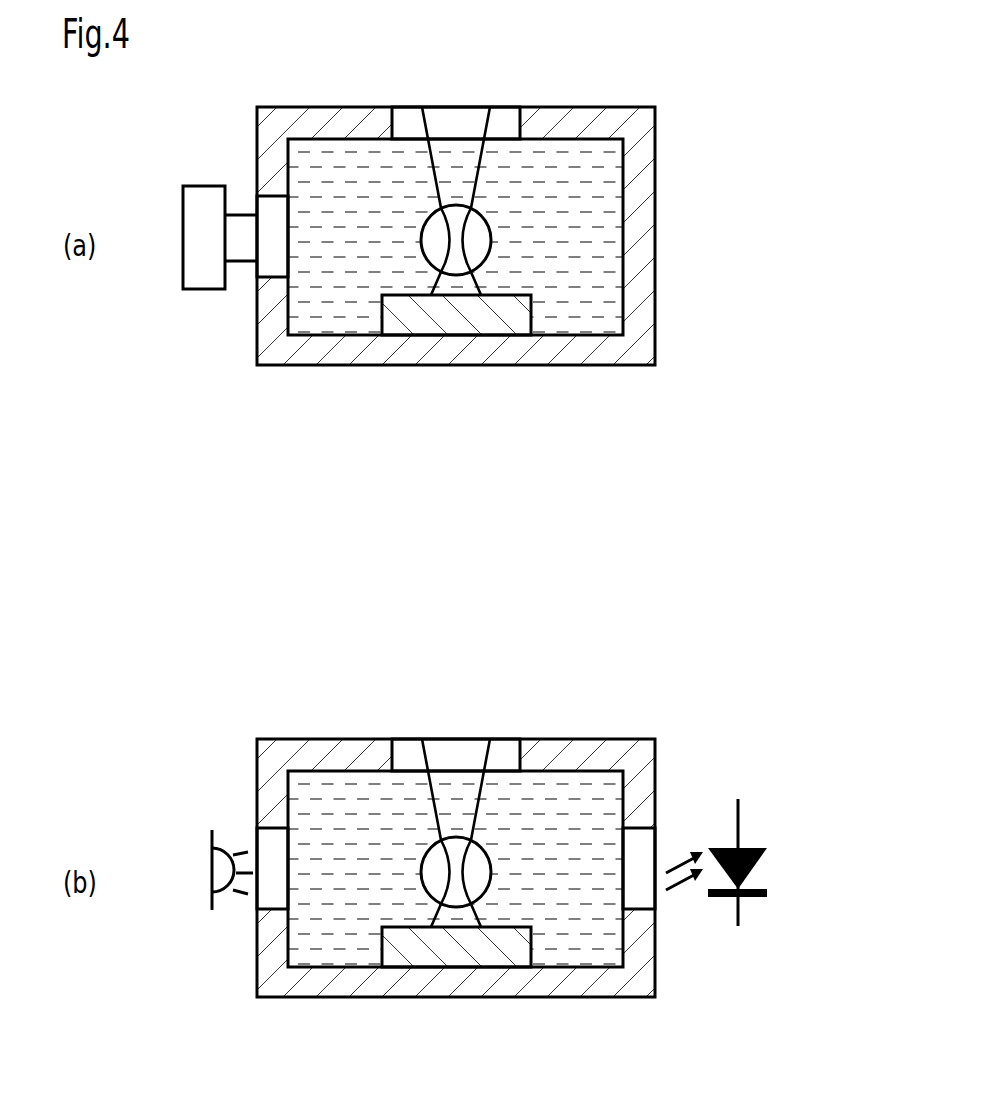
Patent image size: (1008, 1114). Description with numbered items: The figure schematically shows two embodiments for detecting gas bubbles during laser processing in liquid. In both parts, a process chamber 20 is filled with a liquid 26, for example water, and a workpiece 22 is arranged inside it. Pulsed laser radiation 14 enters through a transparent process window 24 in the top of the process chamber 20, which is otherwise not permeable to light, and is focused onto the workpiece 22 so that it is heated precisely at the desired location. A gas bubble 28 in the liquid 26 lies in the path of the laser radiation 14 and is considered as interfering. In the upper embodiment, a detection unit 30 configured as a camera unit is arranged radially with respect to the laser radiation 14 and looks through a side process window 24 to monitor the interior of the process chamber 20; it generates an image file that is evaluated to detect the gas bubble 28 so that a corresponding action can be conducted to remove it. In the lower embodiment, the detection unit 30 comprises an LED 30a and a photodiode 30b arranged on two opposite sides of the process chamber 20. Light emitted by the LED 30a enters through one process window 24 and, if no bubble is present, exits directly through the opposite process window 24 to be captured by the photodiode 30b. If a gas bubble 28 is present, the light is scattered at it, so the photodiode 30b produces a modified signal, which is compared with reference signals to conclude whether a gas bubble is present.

The laser radiation 14 is at (456, 120).
The process chamber 20 is at (572, 107).
The workpiece 22 is at (427, 324).
The process window 24 is at (401, 107).
The liquid 26 is at (600, 194).
The gas bubble 28 is at (490, 253).
The detection unit 30 is at (195, 290).
The LED 30a is at (168, 848).
The photodiode 30b is at (784, 855).